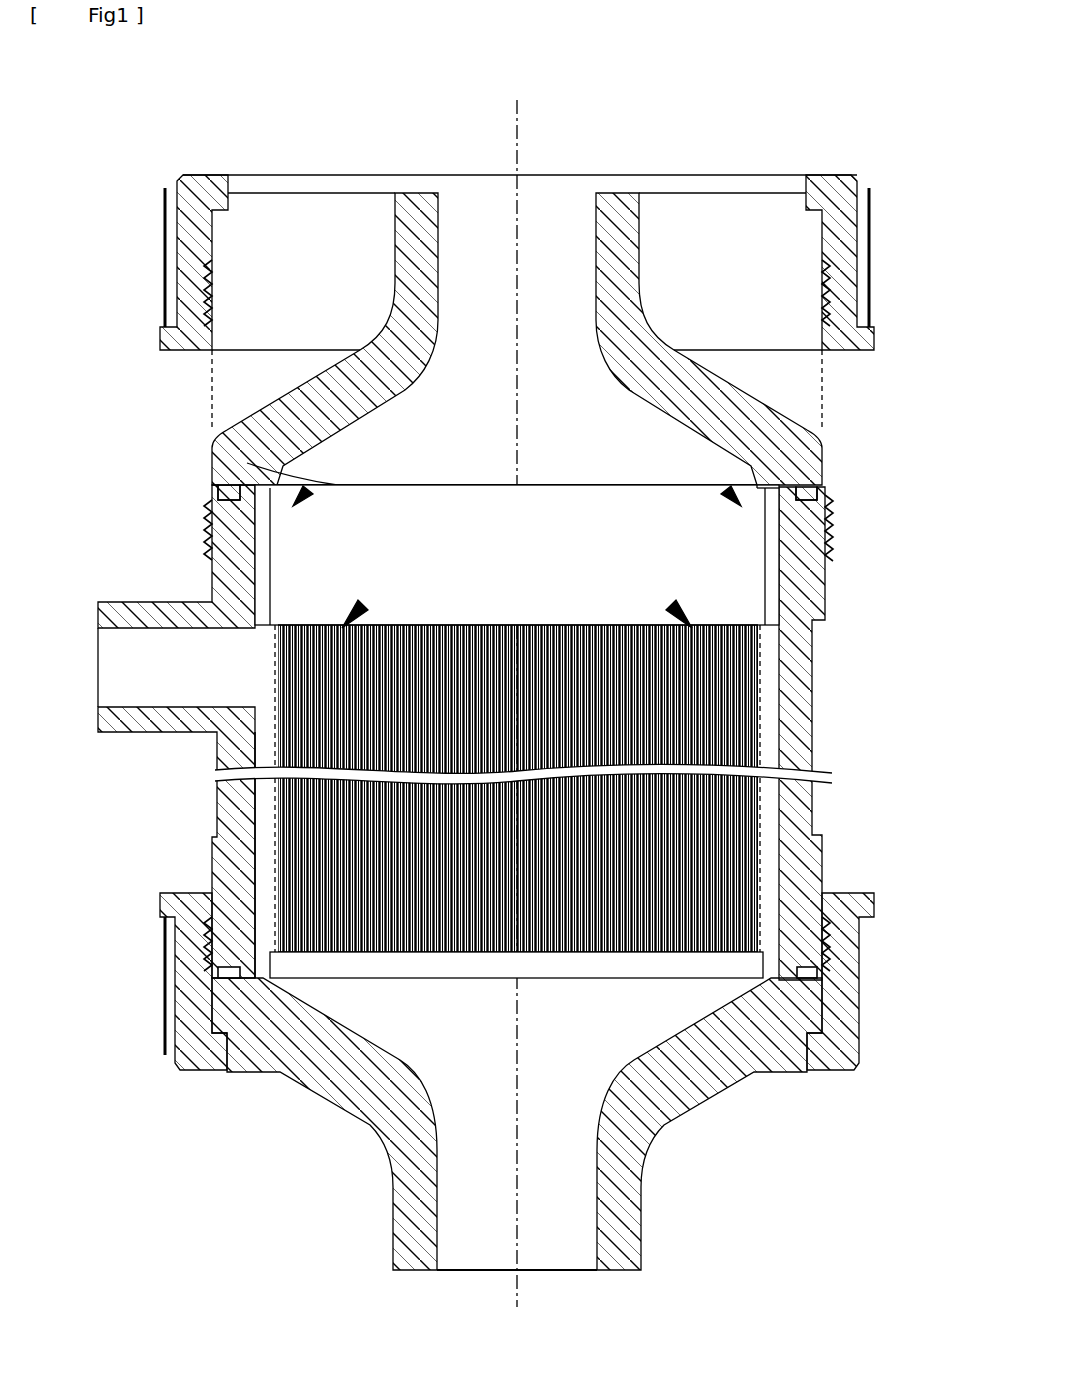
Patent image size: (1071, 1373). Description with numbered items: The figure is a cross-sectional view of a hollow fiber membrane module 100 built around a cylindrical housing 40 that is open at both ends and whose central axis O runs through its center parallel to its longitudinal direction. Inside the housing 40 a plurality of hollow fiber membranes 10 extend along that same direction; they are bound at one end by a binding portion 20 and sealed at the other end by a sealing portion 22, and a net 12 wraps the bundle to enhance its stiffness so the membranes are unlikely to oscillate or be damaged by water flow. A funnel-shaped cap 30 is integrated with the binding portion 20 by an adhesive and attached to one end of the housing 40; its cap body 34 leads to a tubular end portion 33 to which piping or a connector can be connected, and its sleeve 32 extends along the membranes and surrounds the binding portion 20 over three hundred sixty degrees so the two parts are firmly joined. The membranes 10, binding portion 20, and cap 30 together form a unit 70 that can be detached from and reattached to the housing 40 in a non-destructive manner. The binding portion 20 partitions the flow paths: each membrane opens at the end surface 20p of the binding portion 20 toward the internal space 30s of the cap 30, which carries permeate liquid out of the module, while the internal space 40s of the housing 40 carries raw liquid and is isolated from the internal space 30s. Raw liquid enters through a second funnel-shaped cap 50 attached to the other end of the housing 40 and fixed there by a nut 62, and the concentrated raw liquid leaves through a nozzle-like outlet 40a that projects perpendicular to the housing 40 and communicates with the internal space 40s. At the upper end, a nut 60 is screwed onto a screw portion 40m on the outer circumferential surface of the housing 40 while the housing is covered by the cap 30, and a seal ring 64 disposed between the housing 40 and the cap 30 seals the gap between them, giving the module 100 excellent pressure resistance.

The hollow fiber membrane module 100 is at (702, 128).
The central axis O is at (517, 147).
The unit 70 is at (397, 190).
The nut 60 is at (190, 240).
The seal ring 64 is at (817, 491).
The end portion 33 is at (418, 246).
The cap 30 is at (373, 330).
The cap body 34 is at (703, 385).
The internal space 30s is at (490, 454).
The end surface 20p is at (277, 470).
The binding portion 20 is at (283, 522).
The screw portion 40m is at (830, 520).
The sleeve 32 is at (800, 560).
The net 12 is at (763, 642).
The housing 40 is at (797, 695).
The hollow fiber membranes 10 is at (763, 737).
The internal space 40s is at (270, 748).
The outlet 40a is at (122, 738).
The sealing portion 22 is at (755, 967).
The nut 62 is at (195, 990).
The cap 50 is at (345, 1075).